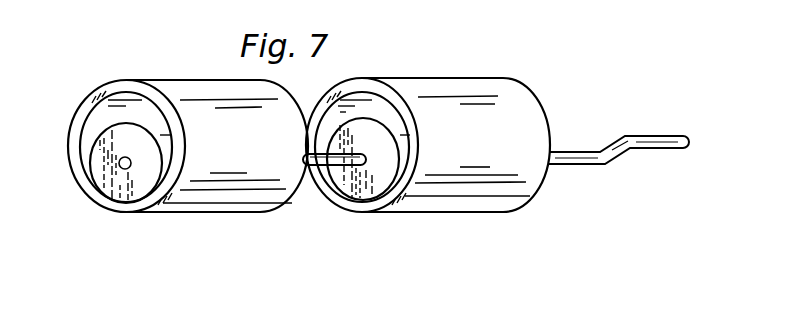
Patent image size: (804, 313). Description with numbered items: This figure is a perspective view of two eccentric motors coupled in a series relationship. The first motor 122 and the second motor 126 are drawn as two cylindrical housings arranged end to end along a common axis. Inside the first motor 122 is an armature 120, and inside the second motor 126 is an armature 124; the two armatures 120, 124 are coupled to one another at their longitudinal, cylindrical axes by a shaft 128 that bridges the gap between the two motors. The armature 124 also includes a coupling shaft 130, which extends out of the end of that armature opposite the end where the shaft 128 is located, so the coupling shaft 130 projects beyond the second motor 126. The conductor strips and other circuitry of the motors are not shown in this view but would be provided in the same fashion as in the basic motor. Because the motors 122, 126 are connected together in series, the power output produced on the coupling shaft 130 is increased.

The armature 120 is at (110, 183).
The eccentric motor 122 is at (188, 224).
The armature 124 is at (352, 189).
The eccentric motor 126 is at (460, 226).
The shaft 128 is at (337, 163).
The coupling shaft 130 is at (609, 167).